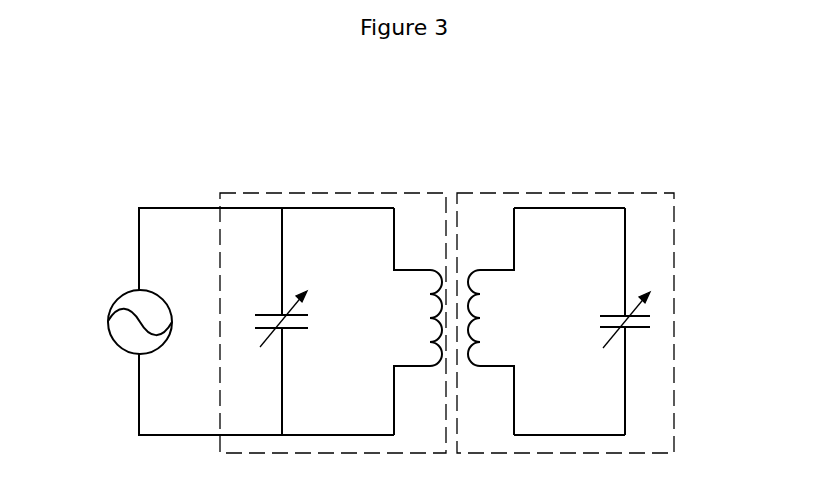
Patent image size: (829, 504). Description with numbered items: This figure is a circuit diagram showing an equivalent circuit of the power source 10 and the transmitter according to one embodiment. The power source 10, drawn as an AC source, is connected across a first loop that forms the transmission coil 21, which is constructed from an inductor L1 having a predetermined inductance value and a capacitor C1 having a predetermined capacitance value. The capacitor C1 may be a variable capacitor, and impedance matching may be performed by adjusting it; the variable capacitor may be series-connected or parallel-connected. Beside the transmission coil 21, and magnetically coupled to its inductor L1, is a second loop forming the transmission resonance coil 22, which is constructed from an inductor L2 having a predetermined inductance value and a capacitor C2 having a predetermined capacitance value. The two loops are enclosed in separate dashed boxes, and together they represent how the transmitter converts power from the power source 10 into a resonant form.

The power source 10 is at (118, 295).
The transmission coil 21 is at (363, 192).
The transmission resonance coil 22 is at (510, 192).
The capacitor C1 is at (268, 321).
The inductor L1 is at (417, 321).
The inductor L2 is at (491, 321).
The capacitor C2 is at (632, 321).